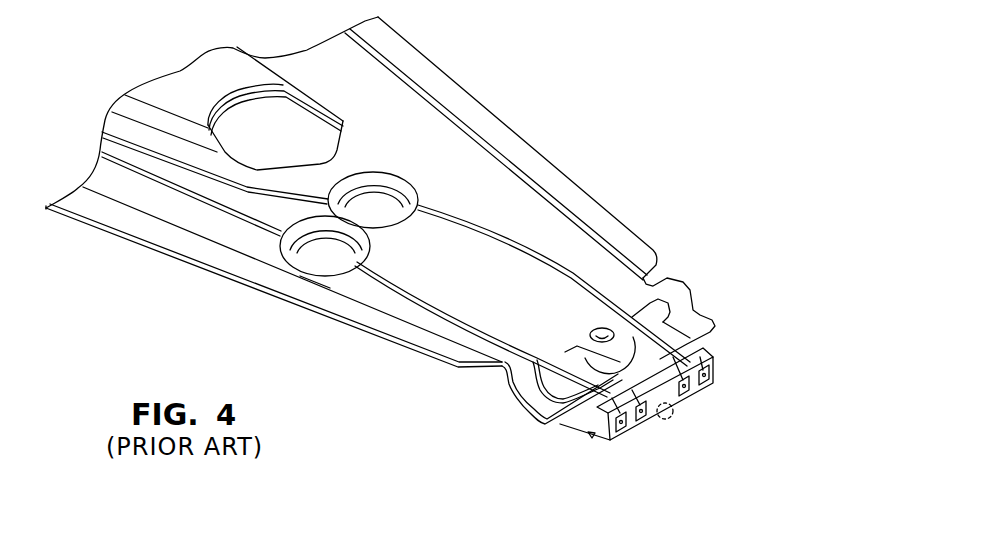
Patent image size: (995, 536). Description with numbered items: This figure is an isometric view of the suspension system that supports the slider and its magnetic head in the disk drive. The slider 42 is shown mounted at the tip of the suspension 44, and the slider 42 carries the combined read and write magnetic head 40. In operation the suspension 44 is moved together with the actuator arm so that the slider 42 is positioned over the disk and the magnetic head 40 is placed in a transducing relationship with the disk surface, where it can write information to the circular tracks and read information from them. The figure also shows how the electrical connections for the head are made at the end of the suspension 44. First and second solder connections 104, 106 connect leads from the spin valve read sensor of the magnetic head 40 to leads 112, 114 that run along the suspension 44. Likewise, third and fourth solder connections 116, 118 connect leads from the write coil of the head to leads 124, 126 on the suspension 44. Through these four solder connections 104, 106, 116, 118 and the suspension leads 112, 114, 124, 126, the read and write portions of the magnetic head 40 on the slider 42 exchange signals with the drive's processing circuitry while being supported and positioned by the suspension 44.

The magnetic head 40 is at (677, 418).
The slider 42 is at (629, 422).
The suspension 44 is at (528, 133).
The first solder connection 104 is at (618, 424).
The second solder connection 106 is at (710, 376).
The lead 112 is at (390, 285).
The lead 114 is at (574, 273).
The third solder connection 116 is at (641, 418).
The fourth solder connection 118 is at (690, 389).
The lead 124 is at (442, 298).
The lead 126 is at (497, 238).